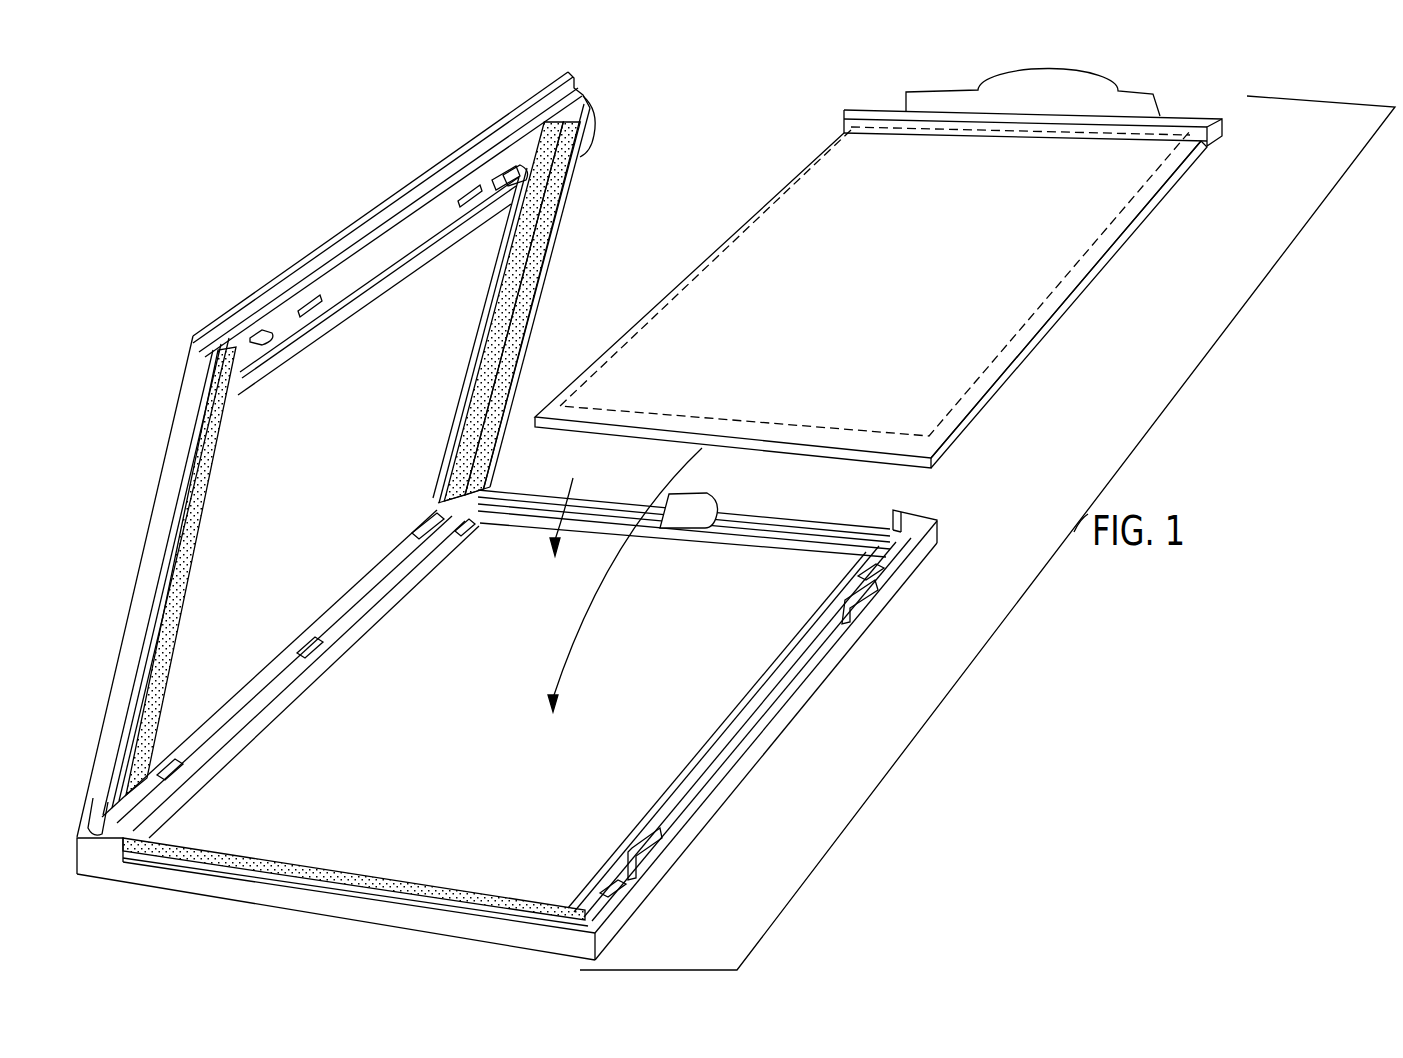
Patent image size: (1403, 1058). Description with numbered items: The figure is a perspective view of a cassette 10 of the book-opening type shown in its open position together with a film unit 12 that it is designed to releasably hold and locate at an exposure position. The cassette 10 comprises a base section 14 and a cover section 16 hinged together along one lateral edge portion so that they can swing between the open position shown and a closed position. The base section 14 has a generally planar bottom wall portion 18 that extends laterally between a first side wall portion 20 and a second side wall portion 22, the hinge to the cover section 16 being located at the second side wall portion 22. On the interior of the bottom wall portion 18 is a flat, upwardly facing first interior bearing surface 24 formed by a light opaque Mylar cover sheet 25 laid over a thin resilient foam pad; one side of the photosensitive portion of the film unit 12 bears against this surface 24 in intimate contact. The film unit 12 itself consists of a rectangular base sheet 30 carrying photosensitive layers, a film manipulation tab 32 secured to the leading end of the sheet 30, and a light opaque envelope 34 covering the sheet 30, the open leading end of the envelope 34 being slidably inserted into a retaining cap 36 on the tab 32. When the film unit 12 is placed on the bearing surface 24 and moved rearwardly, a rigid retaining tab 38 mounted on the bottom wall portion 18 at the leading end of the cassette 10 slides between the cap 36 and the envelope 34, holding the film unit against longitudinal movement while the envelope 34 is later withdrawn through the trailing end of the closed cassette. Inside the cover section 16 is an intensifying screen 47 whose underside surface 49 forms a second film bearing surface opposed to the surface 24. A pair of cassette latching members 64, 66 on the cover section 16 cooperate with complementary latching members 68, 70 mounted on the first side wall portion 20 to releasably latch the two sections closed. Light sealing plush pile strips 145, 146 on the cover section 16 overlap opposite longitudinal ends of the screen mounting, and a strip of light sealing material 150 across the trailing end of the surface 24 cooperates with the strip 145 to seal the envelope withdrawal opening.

The cassette 10 is at (492, 709).
The film unit 12 is at (898, 250).
The base section 14 is at (617, 957).
The cover section 16 is at (374, 454).
The bottom wall portion 18 is at (348, 914).
The first side wall portion 20 is at (742, 761).
The second side wall portion 22 is at (93, 825).
The first interior bearing surface 24 is at (519, 614).
The Mylar cover sheet 25 is at (569, 503).
The base sheet 30 is at (777, 204).
The film manipulation tab 32 is at (1018, 85).
The light opaque envelope 34 is at (1050, 316).
The retaining cap 36 is at (1197, 128).
The retaining tab 38 is at (694, 494).
The intensifying screen 47 is at (484, 246).
The underside surface 49 is at (379, 384).
The cassette latching member 64 is at (258, 330).
The cassette latching member 66 is at (515, 172).
The complementary latching member 68 is at (641, 852).
The complementary latching member 70 is at (847, 587).
The light sealing plush pile strip 145 is at (196, 515).
The light sealing plush pile strip 146 is at (520, 291).
The strip of light sealing material 150 is at (320, 878).